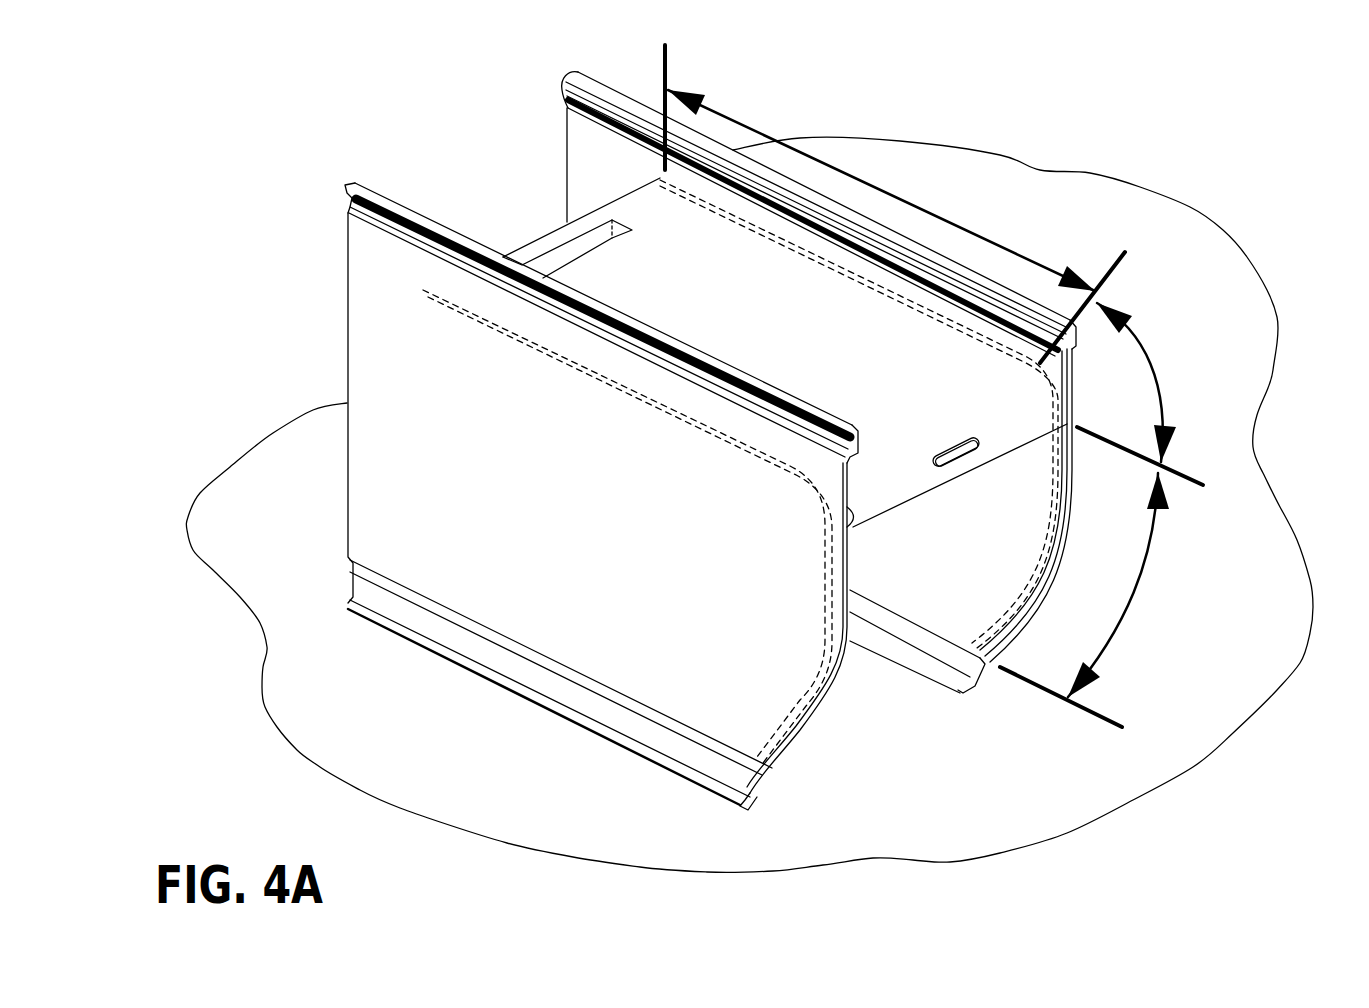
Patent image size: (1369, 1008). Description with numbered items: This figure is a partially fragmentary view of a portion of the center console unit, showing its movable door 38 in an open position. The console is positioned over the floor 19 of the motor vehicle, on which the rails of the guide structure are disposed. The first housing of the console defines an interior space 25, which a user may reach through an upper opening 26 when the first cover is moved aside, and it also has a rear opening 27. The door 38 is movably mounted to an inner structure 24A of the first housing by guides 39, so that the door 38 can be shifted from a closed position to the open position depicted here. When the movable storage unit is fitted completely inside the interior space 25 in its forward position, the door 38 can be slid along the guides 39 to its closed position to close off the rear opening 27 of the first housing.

The floor 19 is at (1208, 267).
The inner structure 24A is at (427, 408).
The interior space 25 is at (1007, 474).
The upper opening 26 is at (527, 207).
The rear opening 27 is at (980, 563).
The door 38 is at (745, 275).
The guides 39 is at (987, 633).